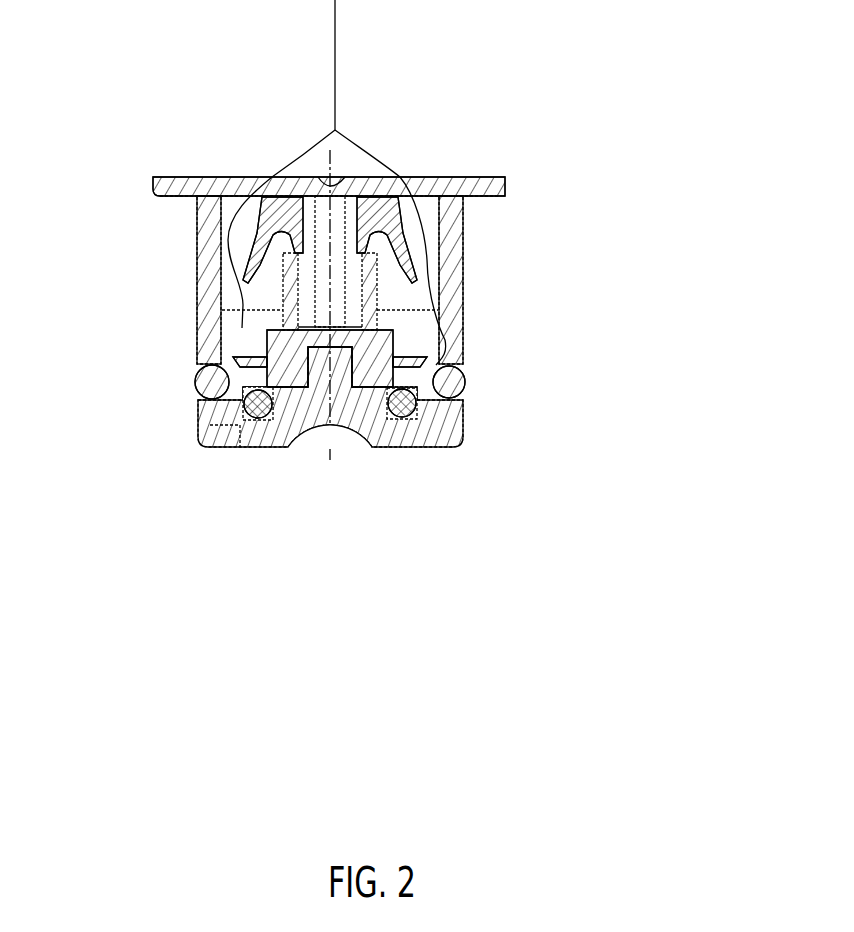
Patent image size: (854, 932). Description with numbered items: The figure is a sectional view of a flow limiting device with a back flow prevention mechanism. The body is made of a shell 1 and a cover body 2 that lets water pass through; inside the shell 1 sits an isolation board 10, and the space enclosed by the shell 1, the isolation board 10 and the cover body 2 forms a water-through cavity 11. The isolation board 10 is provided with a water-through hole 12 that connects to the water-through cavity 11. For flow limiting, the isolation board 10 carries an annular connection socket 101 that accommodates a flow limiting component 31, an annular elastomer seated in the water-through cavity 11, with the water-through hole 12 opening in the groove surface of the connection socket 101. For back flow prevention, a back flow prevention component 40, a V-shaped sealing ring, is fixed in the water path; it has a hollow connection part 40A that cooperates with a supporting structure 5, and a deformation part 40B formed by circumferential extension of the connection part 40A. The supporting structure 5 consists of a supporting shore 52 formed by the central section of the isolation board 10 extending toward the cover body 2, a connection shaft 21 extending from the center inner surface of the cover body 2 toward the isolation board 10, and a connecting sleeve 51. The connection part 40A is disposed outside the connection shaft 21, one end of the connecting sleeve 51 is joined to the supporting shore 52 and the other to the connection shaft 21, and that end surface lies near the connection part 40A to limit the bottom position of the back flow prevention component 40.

The shell 1 is at (257, 403).
The cover body 2 is at (177, 177).
The supporting structure 5 is at (535, 432).
The isolation board 10 is at (262, 428).
The connection socket 101 is at (400, 435).
The water-through cavity 11 is at (228, 278).
The water-through hole 12 is at (240, 433).
The connection shaft 21 is at (295, 262).
The flow limiting component 31 is at (252, 410).
The back flow prevention component 40 is at (499, 233).
The connection part 40A is at (375, 215).
The deformation part 40B is at (410, 255).
The connecting sleeve 51 is at (378, 343).
The supporting shore 52 is at (330, 366).